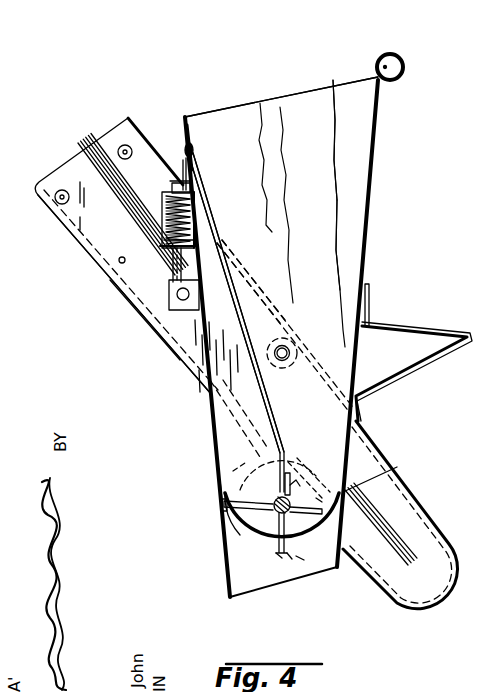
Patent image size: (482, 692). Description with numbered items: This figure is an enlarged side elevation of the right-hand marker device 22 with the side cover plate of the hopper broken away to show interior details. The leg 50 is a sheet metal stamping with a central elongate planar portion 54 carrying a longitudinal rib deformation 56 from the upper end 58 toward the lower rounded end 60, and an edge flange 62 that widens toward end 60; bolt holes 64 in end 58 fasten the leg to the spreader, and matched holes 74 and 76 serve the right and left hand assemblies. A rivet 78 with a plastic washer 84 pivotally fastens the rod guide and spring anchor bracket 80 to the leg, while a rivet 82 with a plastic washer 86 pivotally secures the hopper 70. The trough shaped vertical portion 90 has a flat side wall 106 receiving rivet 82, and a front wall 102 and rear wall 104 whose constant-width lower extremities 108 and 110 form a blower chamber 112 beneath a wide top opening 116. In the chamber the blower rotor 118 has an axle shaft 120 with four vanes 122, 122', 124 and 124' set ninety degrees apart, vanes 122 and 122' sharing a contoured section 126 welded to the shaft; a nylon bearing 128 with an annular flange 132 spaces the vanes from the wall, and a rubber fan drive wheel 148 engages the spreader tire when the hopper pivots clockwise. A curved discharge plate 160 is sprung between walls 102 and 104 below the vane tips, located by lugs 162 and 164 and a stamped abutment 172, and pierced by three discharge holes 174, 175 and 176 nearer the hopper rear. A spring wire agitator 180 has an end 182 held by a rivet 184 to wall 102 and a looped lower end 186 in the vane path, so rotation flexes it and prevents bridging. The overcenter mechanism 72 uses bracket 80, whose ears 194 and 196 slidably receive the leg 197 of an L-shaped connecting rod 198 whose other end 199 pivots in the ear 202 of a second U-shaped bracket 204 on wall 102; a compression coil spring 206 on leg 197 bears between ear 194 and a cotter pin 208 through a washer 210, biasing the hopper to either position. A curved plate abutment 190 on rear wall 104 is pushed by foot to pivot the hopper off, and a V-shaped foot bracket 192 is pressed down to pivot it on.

The tool assembly 22 is at (163, 95).
The top opening 116 is at (258, 88).
The curved plate abutment 190 is at (393, 58).
The front wall 102 is at (212, 412).
The rear wall 104 is at (373, 186).
The blower chamber 112 is at (246, 597).
The side wall 106 is at (337, 170).
The hopper 70 is at (338, 230).
The longitudinal rib deformation 56 is at (93, 165).
The upper end 58 is at (57, 168).
The bolt holes 64 is at (132, 146).
The central elongate planar portion 54 is at (97, 245).
The upper holes 74 is at (124, 268).
The leg 50 is at (140, 303).
The edge flange 62 is at (178, 352).
The lower holes 76 is at (230, 432).
The rivet 184 is at (193, 152).
The agitator end 182 is at (193, 163).
The slidable rod leg 197 is at (181, 182).
The compression coil spring 206 is at (171, 198).
The upper bracket ear 194 is at (173, 184).
The overcenter mechanism 72 is at (156, 222).
The plastic washer 84 is at (197, 202).
The washer 210 is at (162, 243).
The cotter pin 208 is at (205, 240).
The rod pivot end 199 is at (172, 294).
The bracket ear 202 is at (187, 310).
The second U-shaped bracket 204 is at (178, 300).
The agitator 180 is at (273, 390).
The rivet 78 is at (203, 212).
The rod guide and spring anchor bracket 80 is at (205, 226).
The lower bracket ear 196 is at (212, 254).
The L-shaped connecting rod 198 is at (216, 267).
The plastic washer 86 is at (270, 347).
The rivet 82 is at (285, 350).
The trough shaped vertical portion 90 is at (366, 284).
The foot bracket 192 is at (412, 331).
The lower rounded end 60 is at (428, 600).
The lug 164 is at (385, 475).
The lower extremity of rear wall 110 is at (358, 518).
The axle shaft 120 is at (266, 547).
The blower rotor 118 is at (268, 498).
The vane 124 is at (206, 513).
The vane 124' is at (302, 522).
The looped lower end 186 is at (287, 470).
The vane 122 is at (314, 462).
The vane 122' is at (331, 479).
The contoured section 126 is at (333, 470).
The bearing 128 is at (270, 466).
The fan drive wheel 148 is at (232, 470).
The lug 162 is at (222, 495).
The annular flange 132 is at (222, 500).
The discharge plate 160 is at (250, 547).
The lower extremity of front wall 108 is at (224, 535).
The discharge hole 174 is at (298, 556).
The discharge hole 175 is at (303, 560).
The stamped abutment 172 is at (285, 565).
The discharge hole 176 is at (296, 567).